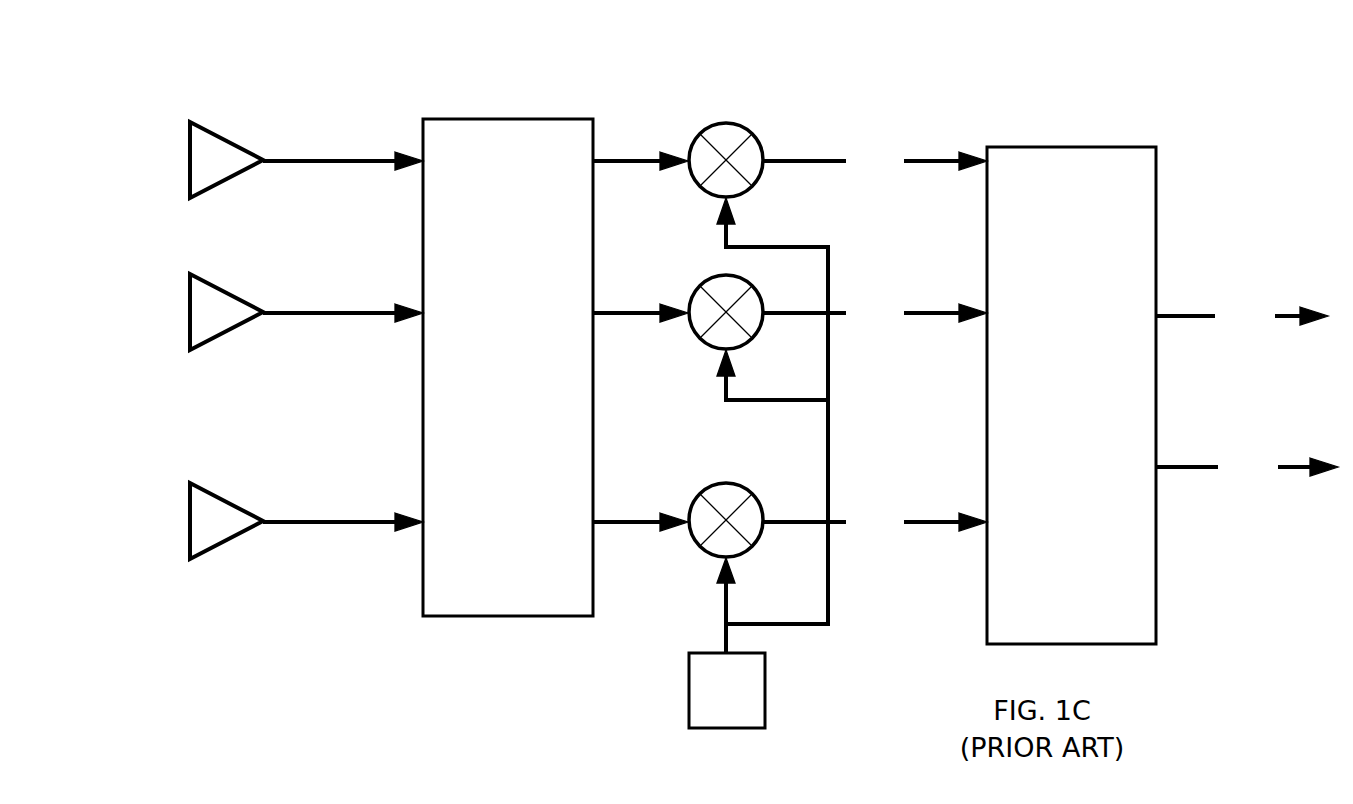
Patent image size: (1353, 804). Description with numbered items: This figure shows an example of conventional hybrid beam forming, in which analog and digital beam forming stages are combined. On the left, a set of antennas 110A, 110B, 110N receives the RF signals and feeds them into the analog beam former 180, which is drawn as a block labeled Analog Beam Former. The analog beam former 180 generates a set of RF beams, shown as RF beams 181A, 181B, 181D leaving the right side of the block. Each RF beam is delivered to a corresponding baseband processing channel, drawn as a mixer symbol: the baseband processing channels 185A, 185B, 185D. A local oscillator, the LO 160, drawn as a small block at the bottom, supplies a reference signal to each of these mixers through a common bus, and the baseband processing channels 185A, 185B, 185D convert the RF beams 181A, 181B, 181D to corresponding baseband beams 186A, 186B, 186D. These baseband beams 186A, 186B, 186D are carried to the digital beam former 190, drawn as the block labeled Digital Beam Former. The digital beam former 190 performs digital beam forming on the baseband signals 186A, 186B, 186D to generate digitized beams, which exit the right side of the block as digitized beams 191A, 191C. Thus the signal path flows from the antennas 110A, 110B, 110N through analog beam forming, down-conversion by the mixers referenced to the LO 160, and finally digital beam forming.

The antenna 110A is at (190, 160).
The antenna 110B is at (190, 312).
The antenna 110N is at (190, 521).
The analog beam former 180 is at (480, 119).
The RF beam 181A is at (632, 158).
The RF beam 181B is at (628, 310).
The RF beam 181D is at (629, 518).
The baseband processing channel 185A is at (760, 135).
The baseband processing channel 185B is at (708, 277).
The baseband processing channel 185D is at (760, 496).
The baseband beam 186A is at (875, 162).
The baseband beam 186B is at (875, 313).
The baseband beam 186D is at (875, 522).
The digital beam former 190 is at (1128, 147).
The digitized beam 191A is at (1242, 316).
The digitized beam 191C is at (1247, 467).
The LO 160 is at (689, 710).